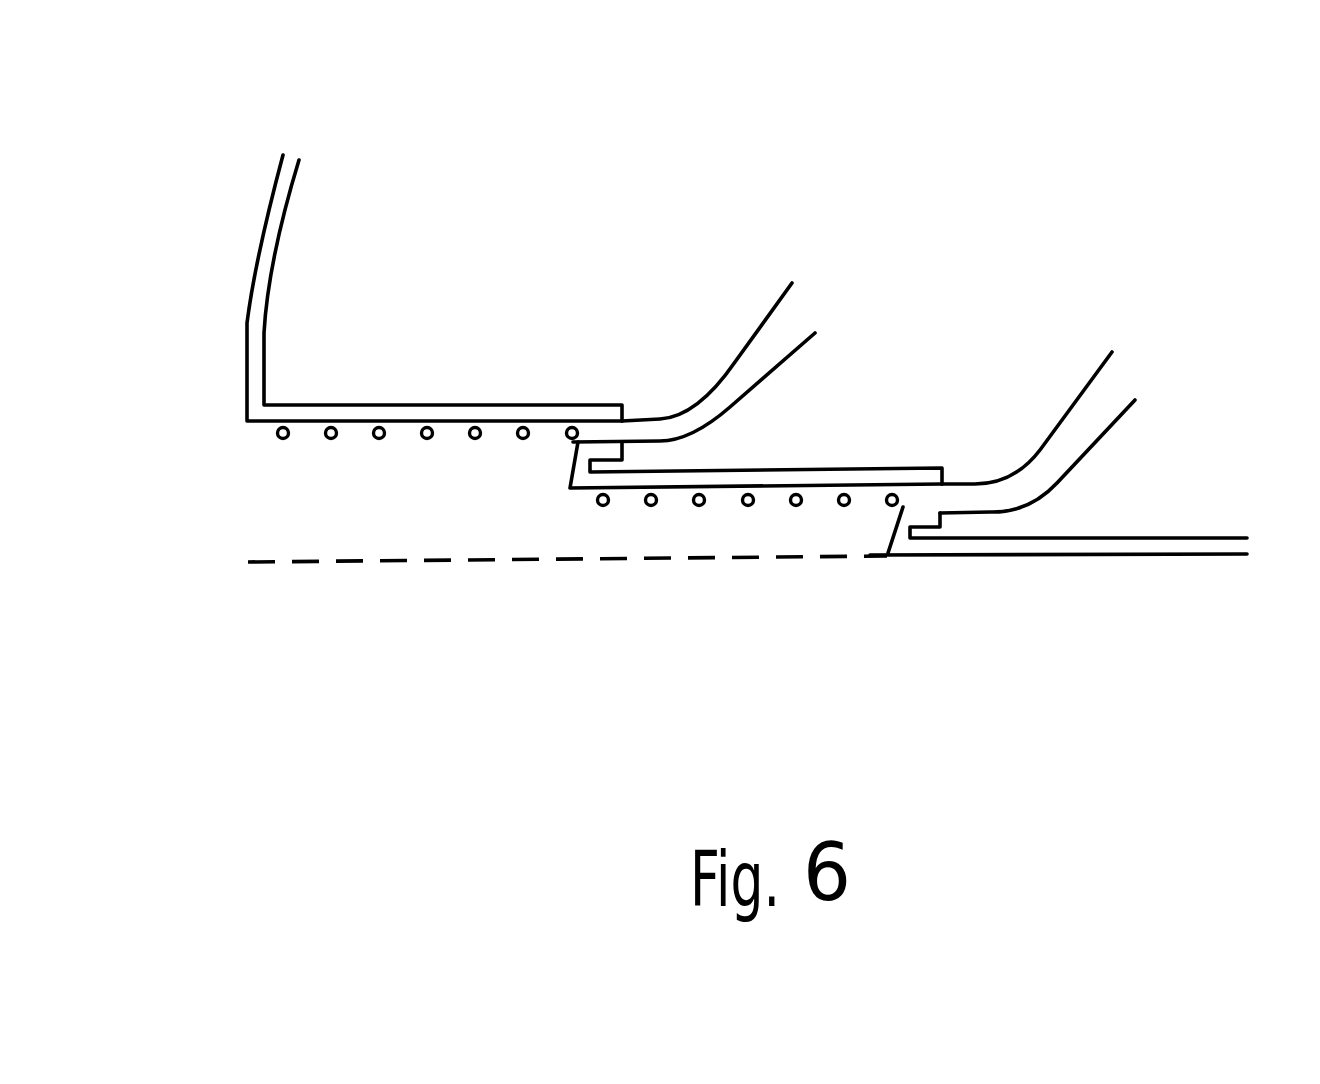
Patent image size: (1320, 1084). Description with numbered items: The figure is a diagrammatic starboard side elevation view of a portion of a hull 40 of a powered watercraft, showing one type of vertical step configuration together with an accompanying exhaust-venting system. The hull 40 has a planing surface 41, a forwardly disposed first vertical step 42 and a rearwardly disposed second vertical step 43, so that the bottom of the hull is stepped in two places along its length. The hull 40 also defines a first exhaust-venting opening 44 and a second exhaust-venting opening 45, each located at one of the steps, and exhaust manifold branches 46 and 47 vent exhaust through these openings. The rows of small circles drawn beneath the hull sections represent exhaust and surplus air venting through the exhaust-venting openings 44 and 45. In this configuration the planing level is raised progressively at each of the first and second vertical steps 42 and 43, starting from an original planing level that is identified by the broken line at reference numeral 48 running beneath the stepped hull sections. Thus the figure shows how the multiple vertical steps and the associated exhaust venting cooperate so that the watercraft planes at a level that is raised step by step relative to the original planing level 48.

The hull 40 is at (278, 178).
The planing surface 41 is at (1180, 553).
The first vertical step 42 is at (888, 553).
The second vertical step 43 is at (562, 489).
The first exhaust-venting opening 44 is at (913, 498).
The second exhaust-venting opening 45 is at (598, 432).
The exhaust manifold branch 46 is at (1087, 388).
The exhaust manifold branch 47 is at (763, 322).
The original planing level 48 is at (295, 563).